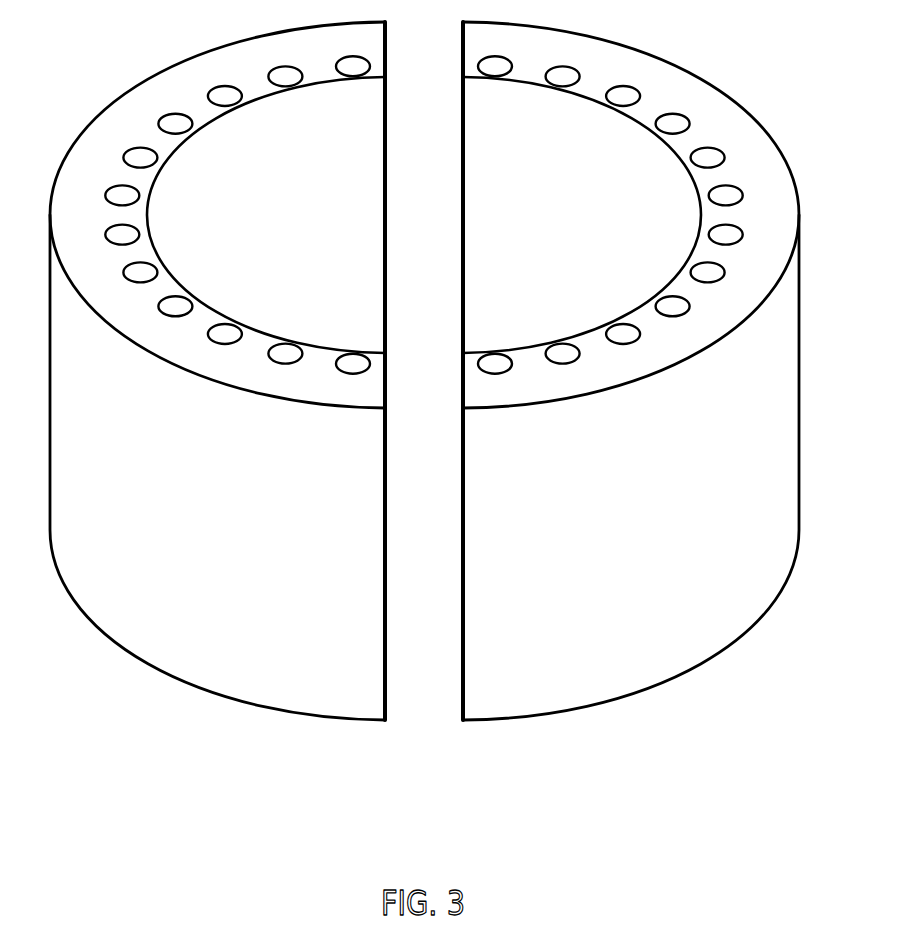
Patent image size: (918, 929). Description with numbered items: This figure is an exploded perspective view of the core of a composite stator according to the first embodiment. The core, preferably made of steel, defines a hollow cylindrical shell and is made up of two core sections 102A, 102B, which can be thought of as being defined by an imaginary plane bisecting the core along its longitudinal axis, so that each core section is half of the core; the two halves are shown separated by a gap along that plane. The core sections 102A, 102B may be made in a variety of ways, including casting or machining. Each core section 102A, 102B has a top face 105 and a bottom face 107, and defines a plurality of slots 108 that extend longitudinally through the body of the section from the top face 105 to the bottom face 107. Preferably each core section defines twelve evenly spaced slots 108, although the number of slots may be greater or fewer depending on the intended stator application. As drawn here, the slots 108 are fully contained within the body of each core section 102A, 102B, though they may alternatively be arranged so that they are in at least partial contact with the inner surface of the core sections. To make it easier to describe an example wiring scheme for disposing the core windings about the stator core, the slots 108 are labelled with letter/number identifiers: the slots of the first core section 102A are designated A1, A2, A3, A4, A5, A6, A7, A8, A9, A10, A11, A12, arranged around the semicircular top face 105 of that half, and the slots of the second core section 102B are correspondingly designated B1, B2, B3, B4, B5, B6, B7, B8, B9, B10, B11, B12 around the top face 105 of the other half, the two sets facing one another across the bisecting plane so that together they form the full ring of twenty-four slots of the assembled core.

The core section 102A is at (214, 541).
The core section 102B is at (561, 541).
The top face 105 is at (137, 318).
The bottom face 107 is at (173, 680).
The slots 108 is at (240, 96).
The slot A1 is at (353, 49).
The slot A2 is at (111, 189).
The slot A3 is at (285, 58).
The slot A4 is at (131, 144).
The slot A5 is at (225, 81).
The slot A6 is at (175, 107).
The slot A7 is at (353, 379).
The slot A8 is at (112, 241).
The slot A9 is at (285, 370).
The slot A10 is at (127, 285).
The slot A11 is at (225, 349).
The slot A12 is at (175, 321).
The slot B1 is at (739, 242).
The slot B2 is at (495, 379).
The slot B3 is at (720, 285).
The slot B4 is at (563, 370).
The slot B5 is at (673, 322).
The slot B6 is at (623, 349).
The slot B7 is at (739, 191).
The slot B8 is at (495, 49).
The slot B9 is at (718, 144).
The slot B10 is at (563, 58).
The slot B11 is at (674, 107).
The slot B12 is at (623, 81).